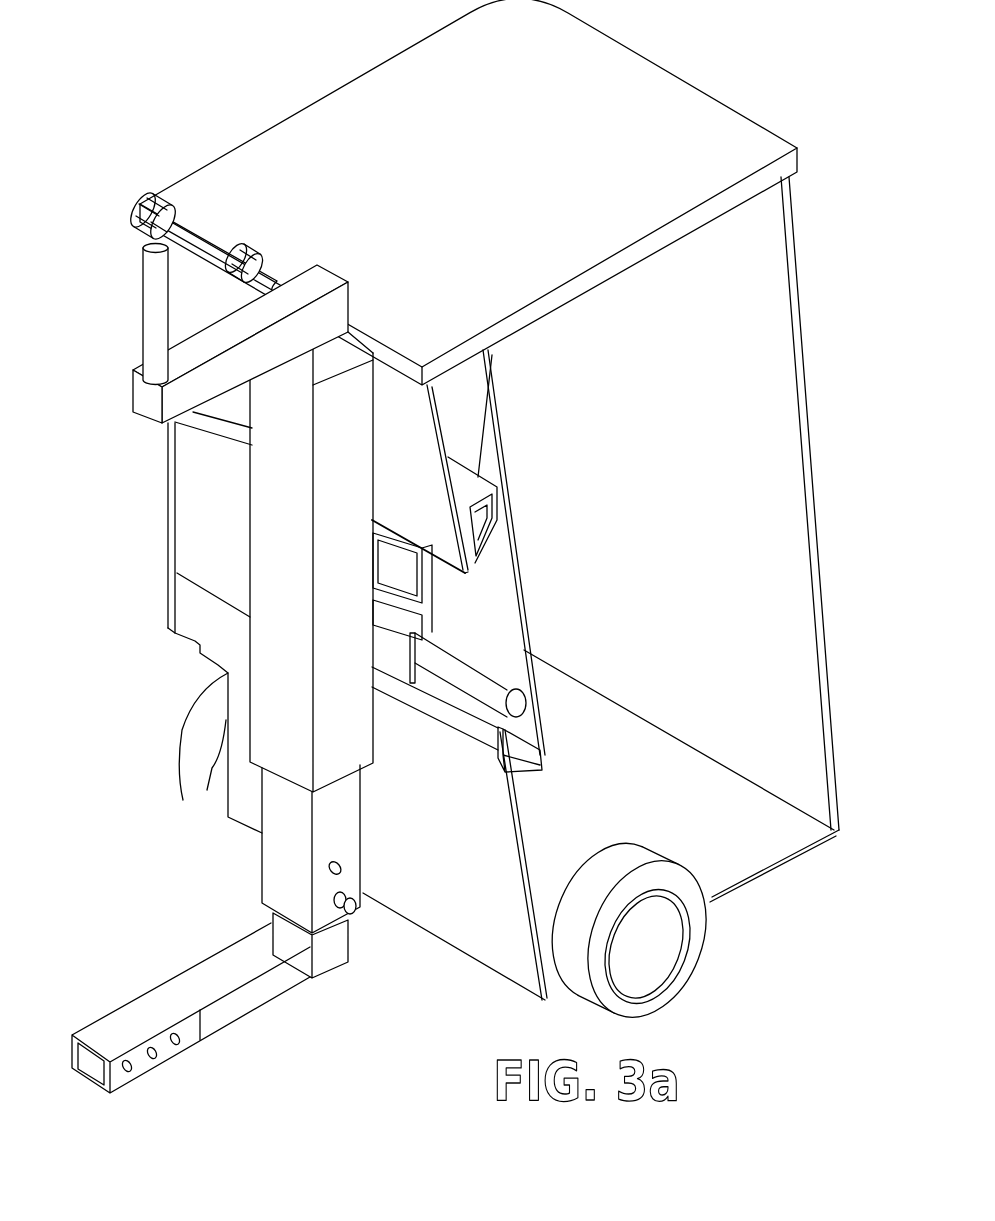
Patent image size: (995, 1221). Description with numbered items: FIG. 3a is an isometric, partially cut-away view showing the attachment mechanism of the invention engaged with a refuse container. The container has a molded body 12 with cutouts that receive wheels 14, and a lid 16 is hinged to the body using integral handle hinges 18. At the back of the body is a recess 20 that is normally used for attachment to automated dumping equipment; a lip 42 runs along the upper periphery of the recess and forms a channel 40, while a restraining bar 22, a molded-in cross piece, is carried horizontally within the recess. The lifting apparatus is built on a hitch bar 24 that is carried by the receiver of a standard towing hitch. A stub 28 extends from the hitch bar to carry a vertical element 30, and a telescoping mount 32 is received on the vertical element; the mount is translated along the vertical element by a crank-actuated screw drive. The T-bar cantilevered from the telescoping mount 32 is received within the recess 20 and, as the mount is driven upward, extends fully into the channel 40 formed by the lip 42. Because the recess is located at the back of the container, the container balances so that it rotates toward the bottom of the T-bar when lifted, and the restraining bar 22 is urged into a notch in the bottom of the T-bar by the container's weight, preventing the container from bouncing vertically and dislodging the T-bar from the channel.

The molded body 12 is at (807, 433).
The wheels 14 is at (655, 927).
The lid 16 is at (332, 128).
The integral handle hinges 18 is at (168, 240).
The recess 20 is at (485, 607).
The restraining bar 22 is at (472, 683).
The hitch bar 24 is at (230, 960).
The stub 28 is at (325, 952).
The vertical element 30 is at (307, 818).
The telescoping mount 32 is at (293, 610).
The channel 40 is at (470, 480).
The lip 42 is at (473, 532).